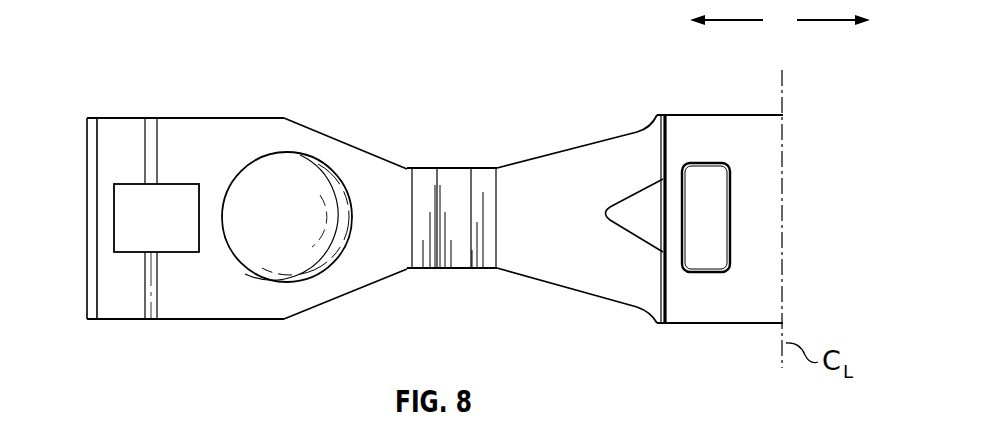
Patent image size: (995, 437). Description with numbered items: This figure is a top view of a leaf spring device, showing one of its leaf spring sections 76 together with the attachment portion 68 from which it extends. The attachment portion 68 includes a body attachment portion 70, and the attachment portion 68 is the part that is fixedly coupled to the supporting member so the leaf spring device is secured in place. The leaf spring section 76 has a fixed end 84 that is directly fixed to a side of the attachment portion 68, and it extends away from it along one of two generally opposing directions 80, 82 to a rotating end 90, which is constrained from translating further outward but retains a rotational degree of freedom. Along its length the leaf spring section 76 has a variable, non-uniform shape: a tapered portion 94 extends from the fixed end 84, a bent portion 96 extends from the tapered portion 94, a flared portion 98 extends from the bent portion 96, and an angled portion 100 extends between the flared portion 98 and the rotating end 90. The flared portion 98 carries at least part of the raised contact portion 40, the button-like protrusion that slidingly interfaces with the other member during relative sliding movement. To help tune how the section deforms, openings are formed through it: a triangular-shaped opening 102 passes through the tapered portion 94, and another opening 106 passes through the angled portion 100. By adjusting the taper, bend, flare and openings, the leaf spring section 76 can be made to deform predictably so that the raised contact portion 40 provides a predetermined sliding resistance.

The raised contact portion 40 is at (301, 188).
The attachment portion 68 is at (717, 122).
The body attachment portion 70 is at (720, 305).
The leaf spring section 76 is at (246, 117).
The opposing direction 80 is at (727, 22).
The opposing direction 82 is at (832, 22).
The fixed end 84 is at (653, 128).
The rotating end 90 is at (94, 117).
The tapered portion 94 is at (573, 147).
The bent portion 96 is at (452, 168).
The flared portion 98 is at (295, 121).
The angled portion 100 is at (133, 117).
The opening 102 is at (623, 220).
The opening 106 is at (131, 218).